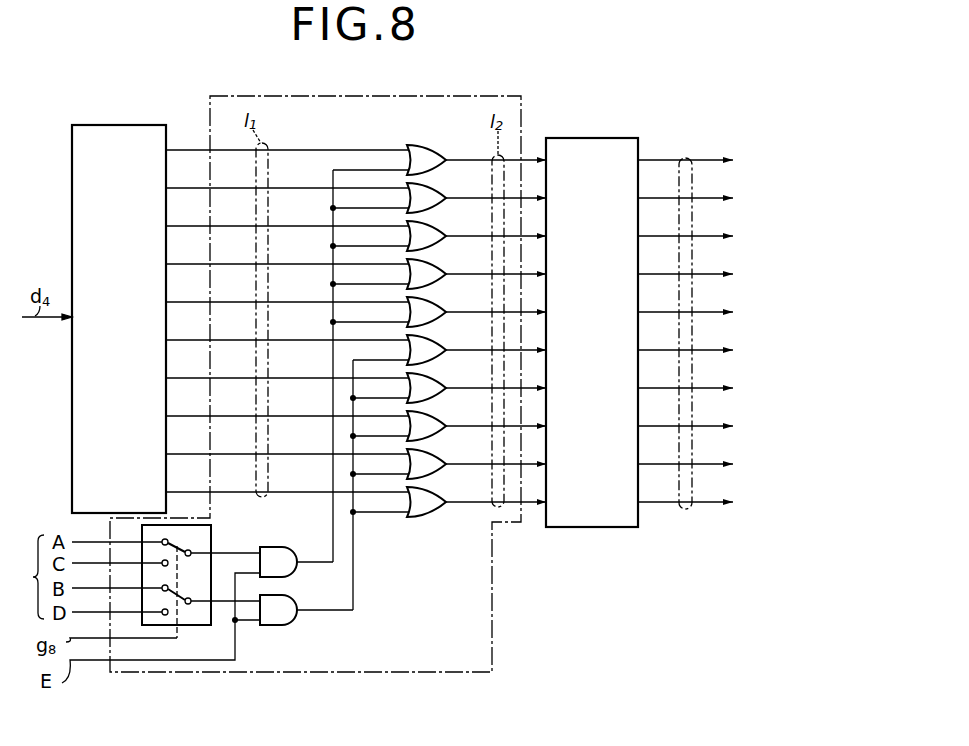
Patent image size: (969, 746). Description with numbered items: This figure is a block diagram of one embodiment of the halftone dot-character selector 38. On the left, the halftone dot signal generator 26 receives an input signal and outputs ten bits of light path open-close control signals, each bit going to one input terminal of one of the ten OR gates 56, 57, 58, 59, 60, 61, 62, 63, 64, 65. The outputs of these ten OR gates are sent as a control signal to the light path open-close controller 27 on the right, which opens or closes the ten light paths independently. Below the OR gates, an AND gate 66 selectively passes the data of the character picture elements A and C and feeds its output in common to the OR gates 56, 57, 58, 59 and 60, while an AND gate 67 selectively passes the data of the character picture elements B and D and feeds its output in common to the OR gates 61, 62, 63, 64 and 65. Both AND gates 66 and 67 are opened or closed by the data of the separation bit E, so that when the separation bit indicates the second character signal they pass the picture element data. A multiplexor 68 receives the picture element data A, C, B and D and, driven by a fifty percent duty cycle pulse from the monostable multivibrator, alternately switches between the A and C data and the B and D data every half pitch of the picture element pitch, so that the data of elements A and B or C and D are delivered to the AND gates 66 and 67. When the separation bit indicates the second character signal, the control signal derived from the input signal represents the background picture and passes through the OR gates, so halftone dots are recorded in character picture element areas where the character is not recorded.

The halftone dot signal generator 26 is at (131, 124).
The light path open-close controller 27 is at (590, 137).
The halftone dot-character selector 38 is at (489, 95).
The OR gate 56 is at (443, 162).
The OR gate 57 is at (443, 200).
The OR gate 58 is at (443, 238).
The OR gate 59 is at (443, 276).
The OR gate 60 is at (443, 314).
The OR gate 61 is at (443, 352).
The OR gate 62 is at (443, 390).
The OR gate 63 is at (443, 428).
The OR gate 64 is at (443, 466).
The OR gate 65 is at (443, 504).
The AND gate 66 is at (292, 548).
The AND gate 67 is at (292, 598).
The multiplexor 68 is at (212, 533).